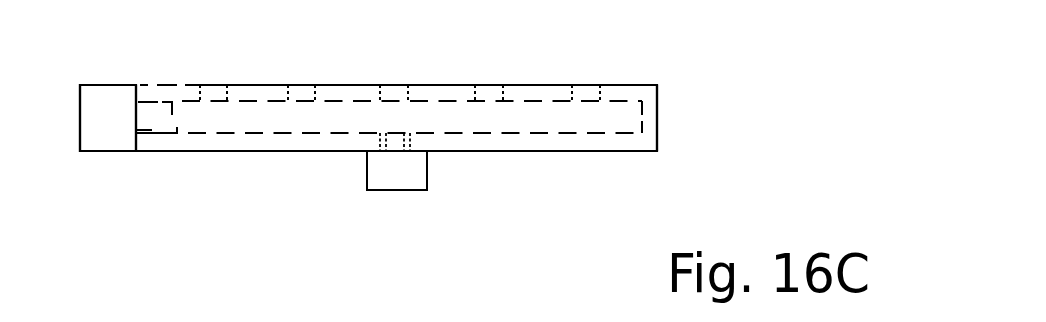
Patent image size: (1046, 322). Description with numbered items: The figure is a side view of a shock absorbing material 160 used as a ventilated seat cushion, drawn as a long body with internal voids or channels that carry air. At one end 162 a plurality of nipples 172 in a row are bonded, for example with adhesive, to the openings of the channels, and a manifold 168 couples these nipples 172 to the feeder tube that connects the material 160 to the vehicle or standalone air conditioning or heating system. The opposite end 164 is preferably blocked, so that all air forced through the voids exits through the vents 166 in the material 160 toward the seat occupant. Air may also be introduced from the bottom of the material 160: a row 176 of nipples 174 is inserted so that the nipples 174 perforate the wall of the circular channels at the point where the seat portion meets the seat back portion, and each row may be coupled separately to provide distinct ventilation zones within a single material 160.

The material 160 is at (480, 152).
The end 162 is at (158, 85).
The opposite end 164 is at (658, 120).
The vents 166 is at (505, 85).
The manifold 168 is at (108, 128).
The nipples 172 is at (160, 127).
The nipples 174 is at (380, 142).
The row 176 is at (413, 190).